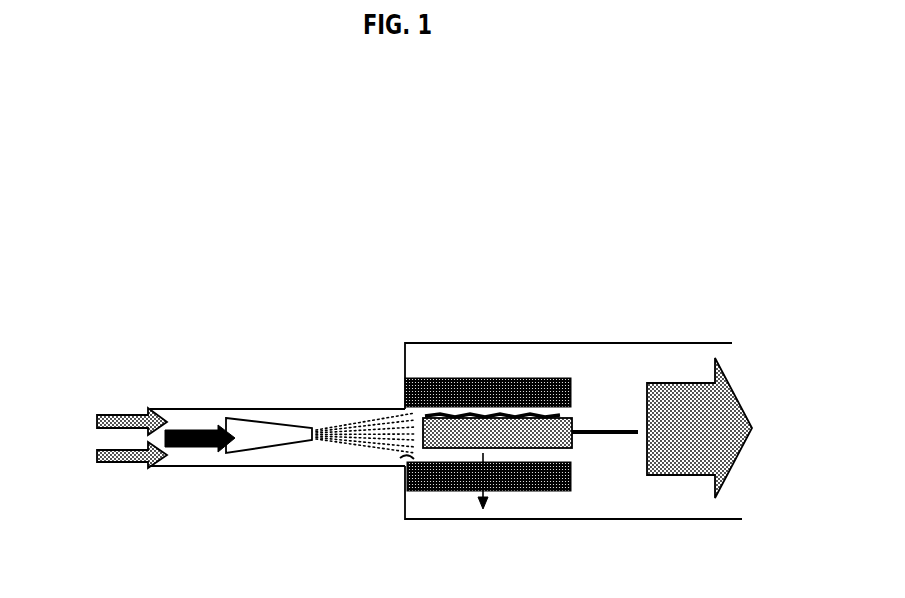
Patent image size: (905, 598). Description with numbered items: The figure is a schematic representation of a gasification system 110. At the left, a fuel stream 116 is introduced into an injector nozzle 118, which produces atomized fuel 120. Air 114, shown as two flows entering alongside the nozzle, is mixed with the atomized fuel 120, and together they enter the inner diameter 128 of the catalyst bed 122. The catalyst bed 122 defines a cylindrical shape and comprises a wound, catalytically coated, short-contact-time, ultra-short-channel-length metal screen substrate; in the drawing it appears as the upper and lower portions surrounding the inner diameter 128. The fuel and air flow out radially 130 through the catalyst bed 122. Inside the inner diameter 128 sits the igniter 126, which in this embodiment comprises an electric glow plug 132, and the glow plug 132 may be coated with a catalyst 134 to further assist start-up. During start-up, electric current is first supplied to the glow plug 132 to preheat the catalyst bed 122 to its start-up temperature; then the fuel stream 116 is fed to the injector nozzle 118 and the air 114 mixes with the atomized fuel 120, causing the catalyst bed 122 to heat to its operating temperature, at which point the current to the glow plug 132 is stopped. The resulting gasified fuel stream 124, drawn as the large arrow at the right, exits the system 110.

The gasification system 110 is at (468, 199).
The airflow 114 is at (108, 420).
The fuel stream 116 is at (203, 430).
The injector nozzle 118 is at (258, 432).
The atomized fuel 120 is at (328, 443).
The catalyst bed 122 is at (438, 378).
The gasified fuel stream 124 is at (682, 393).
The igniter 126 is at (518, 440).
The inner diameter 128 is at (403, 455).
The radial flow 130 is at (501, 487).
The electric glow plug 132 is at (552, 437).
The catalyst 134 is at (553, 415).